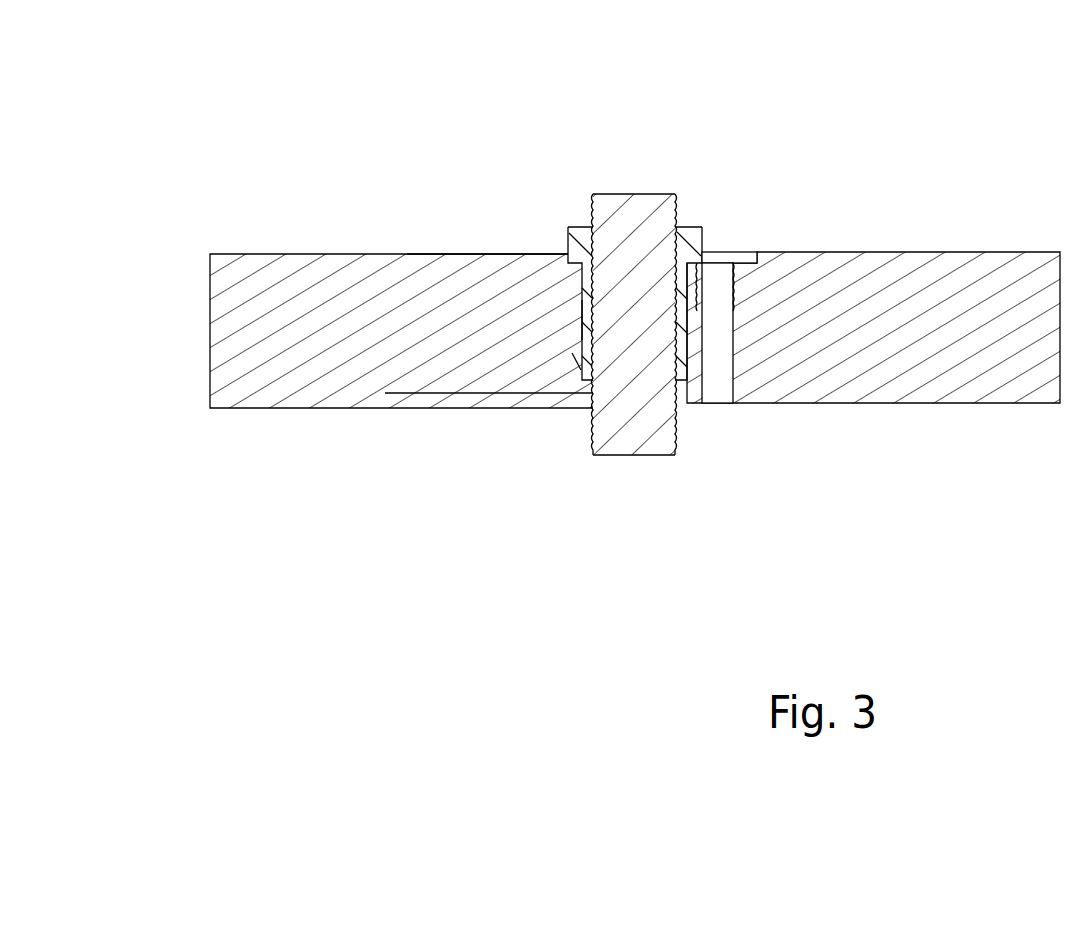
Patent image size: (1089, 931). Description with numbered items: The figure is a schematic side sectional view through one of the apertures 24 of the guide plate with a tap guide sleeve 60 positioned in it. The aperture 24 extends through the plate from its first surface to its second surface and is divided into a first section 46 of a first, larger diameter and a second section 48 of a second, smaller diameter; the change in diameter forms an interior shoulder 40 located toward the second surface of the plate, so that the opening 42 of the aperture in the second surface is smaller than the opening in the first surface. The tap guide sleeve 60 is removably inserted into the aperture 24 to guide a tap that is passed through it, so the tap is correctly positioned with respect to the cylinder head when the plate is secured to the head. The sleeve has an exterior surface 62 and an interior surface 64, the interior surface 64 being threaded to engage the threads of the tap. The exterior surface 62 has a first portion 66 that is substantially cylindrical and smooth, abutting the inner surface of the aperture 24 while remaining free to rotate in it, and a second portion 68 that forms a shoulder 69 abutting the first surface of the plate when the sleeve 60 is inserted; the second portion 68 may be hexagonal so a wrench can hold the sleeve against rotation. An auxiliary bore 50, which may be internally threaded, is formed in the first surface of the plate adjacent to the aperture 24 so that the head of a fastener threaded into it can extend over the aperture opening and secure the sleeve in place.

The aperture 24 is at (389, 246).
The interior shoulder 40 is at (572, 353).
The opening 42 is at (590, 410).
The first section 46 is at (582, 318).
The second section 48 is at (385, 393).
The auxiliary bore 50 is at (715, 382).
The tap guide sleeve 60 is at (687, 227).
The exterior surface 62 is at (723, 253).
The interior surface 64 is at (592, 223).
The first portion 66 is at (407, 253).
The second portion 68 is at (418, 222).
The shoulder 69 is at (565, 247).